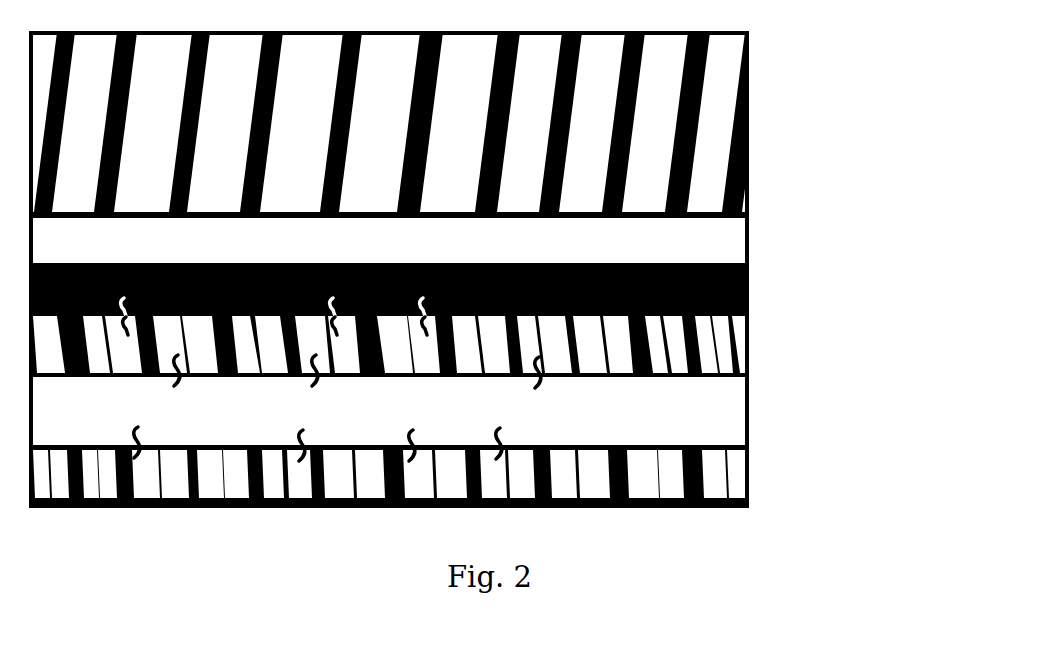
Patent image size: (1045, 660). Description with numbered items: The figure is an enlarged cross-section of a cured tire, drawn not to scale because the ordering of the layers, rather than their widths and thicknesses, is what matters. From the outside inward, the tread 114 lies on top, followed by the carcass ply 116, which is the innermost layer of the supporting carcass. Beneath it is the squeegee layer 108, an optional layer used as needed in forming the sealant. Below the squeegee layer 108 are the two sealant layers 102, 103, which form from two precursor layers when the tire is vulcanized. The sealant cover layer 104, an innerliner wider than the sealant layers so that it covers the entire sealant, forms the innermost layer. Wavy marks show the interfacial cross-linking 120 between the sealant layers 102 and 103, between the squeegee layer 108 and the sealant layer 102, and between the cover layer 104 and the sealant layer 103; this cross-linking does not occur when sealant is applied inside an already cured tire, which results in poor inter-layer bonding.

The tread 114 is at (748, 157).
The carcass ply 116 is at (748, 232).
The squeegee layer 108 is at (748, 302).
The sealant layer 102 is at (748, 351).
The sealant layer 103 is at (748, 414).
The sealant cover layer 104 is at (748, 476).
The interfacial cross-linking 120 is at (502, 437).